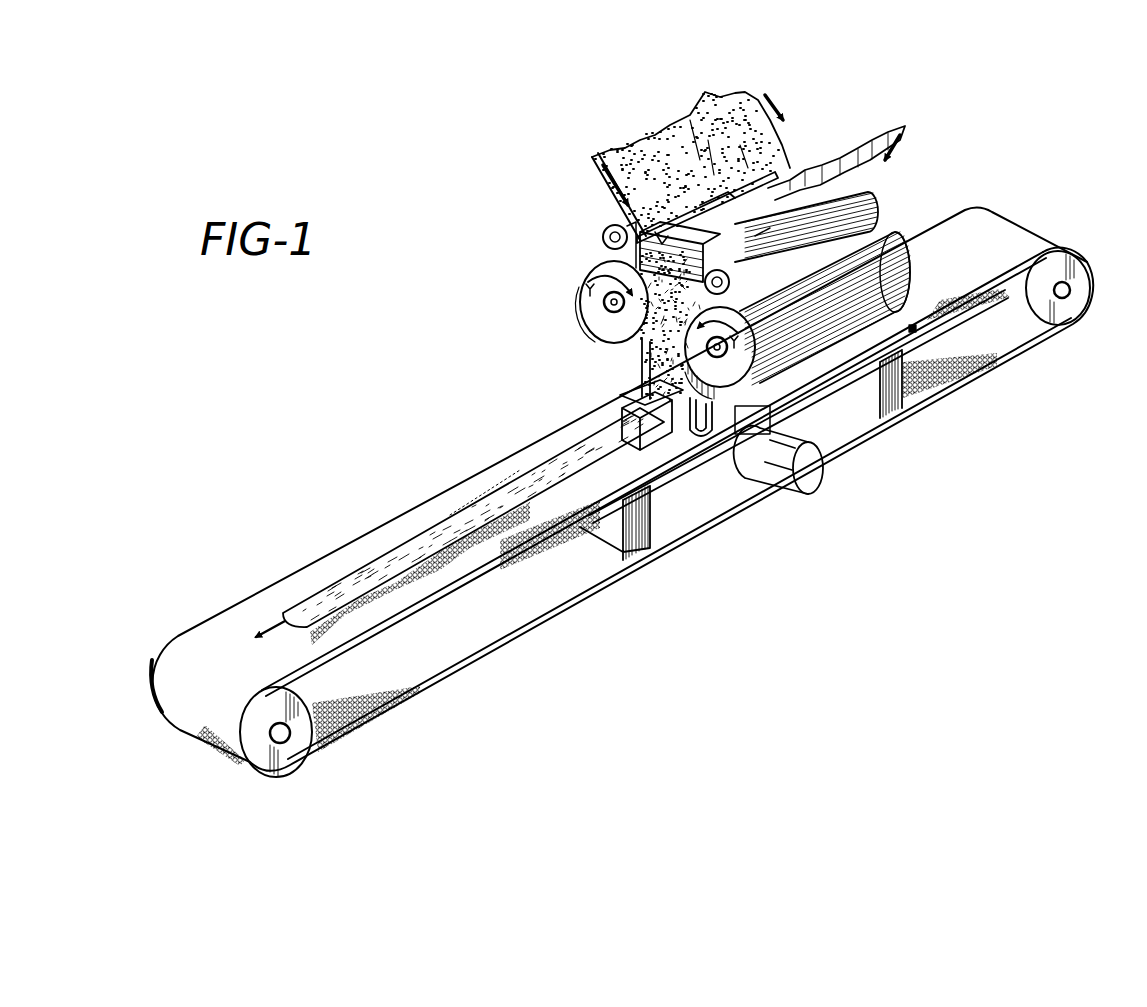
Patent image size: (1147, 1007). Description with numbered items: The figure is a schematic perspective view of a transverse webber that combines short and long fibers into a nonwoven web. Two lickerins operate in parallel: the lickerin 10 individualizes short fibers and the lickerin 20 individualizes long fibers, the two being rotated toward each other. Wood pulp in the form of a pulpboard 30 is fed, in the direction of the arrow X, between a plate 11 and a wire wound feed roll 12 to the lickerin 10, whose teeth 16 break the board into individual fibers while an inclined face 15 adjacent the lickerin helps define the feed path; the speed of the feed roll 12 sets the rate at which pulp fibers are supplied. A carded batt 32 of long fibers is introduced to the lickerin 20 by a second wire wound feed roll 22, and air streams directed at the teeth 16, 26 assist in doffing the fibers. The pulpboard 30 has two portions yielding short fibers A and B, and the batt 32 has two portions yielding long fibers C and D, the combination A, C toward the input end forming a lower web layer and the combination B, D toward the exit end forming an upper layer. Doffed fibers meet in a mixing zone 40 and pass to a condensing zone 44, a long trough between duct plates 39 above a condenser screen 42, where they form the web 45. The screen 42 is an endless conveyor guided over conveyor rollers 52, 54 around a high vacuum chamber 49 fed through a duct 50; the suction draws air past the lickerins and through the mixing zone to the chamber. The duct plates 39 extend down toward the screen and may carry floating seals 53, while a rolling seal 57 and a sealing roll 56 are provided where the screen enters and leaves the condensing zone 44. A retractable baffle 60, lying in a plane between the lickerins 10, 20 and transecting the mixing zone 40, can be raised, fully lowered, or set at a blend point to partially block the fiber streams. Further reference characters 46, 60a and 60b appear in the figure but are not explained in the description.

The lickerin 10 is at (578, 303).
The plate 11 is at (770, 172).
The wire wound feed roll 12 is at (607, 238).
The inclined face 15 is at (607, 262).
The teeth 16 is at (590, 336).
The lickerin 20 is at (912, 280).
The second wire wound feed roll 22 is at (878, 212).
The teeth 26 is at (908, 266).
The pulpboard 30 is at (706, 105).
The carded batt 32 is at (912, 123).
The duct plates 39 is at (640, 390).
The mixing zone 40 is at (668, 353).
The condenser screen 42 is at (505, 466).
The condensing zone 44 is at (693, 405).
The web 45 is at (443, 527).
The frame rail 46 is at (842, 388).
The high vacuum chamber 49 is at (660, 524).
The duct 50 is at (826, 474).
The conveyor roller 52 is at (297, 748).
The floating seals 53 is at (868, 362).
The conveyor roller 54 is at (1078, 294).
The sealing roll 56 is at (625, 428).
The rolling seal 57 is at (916, 328).
The retractable baffle 60 is at (712, 212).
The strip edge 60a is at (815, 170).
The strip edge 60b is at (660, 235).
The short fibers A is at (742, 95).
The short fibers B is at (600, 157).
The long fibers C is at (885, 130).
The long fibers D is at (752, 240).
The arrow X is at (785, 93).